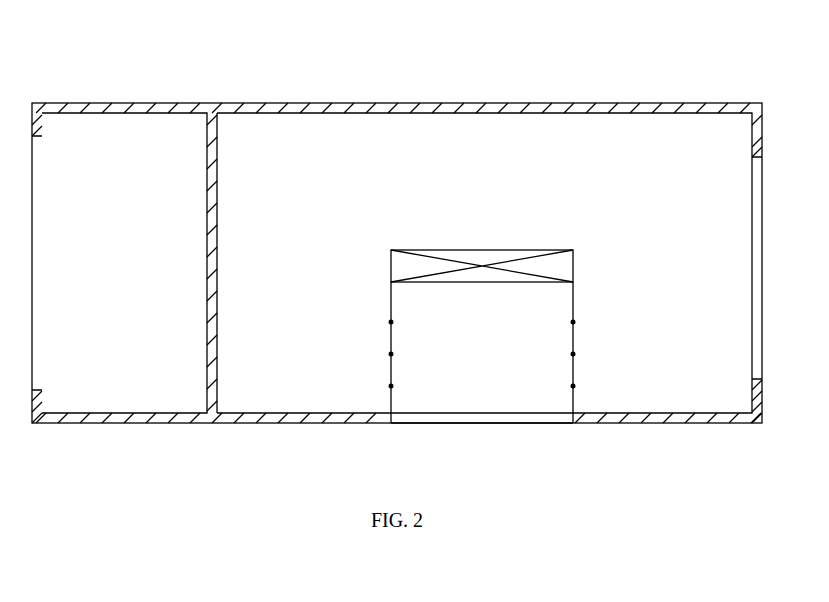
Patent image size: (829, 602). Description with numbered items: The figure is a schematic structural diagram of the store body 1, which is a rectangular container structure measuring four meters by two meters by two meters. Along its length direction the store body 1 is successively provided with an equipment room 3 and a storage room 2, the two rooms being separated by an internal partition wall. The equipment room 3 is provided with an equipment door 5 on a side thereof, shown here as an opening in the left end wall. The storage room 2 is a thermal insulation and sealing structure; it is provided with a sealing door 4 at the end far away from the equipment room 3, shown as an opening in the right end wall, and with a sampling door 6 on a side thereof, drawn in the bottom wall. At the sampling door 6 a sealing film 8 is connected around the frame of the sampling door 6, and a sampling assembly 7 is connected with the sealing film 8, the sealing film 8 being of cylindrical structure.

The store body 1 is at (318, 102).
The storage room 2 is at (490, 147).
The equipment room 3 is at (147, 138).
The sealing door 4 is at (755, 257).
The equipment door 5 is at (35, 298).
The sampling door 6 is at (470, 415).
The sampling assembly 7 is at (482, 260).
The sealing film 8 is at (573, 346).